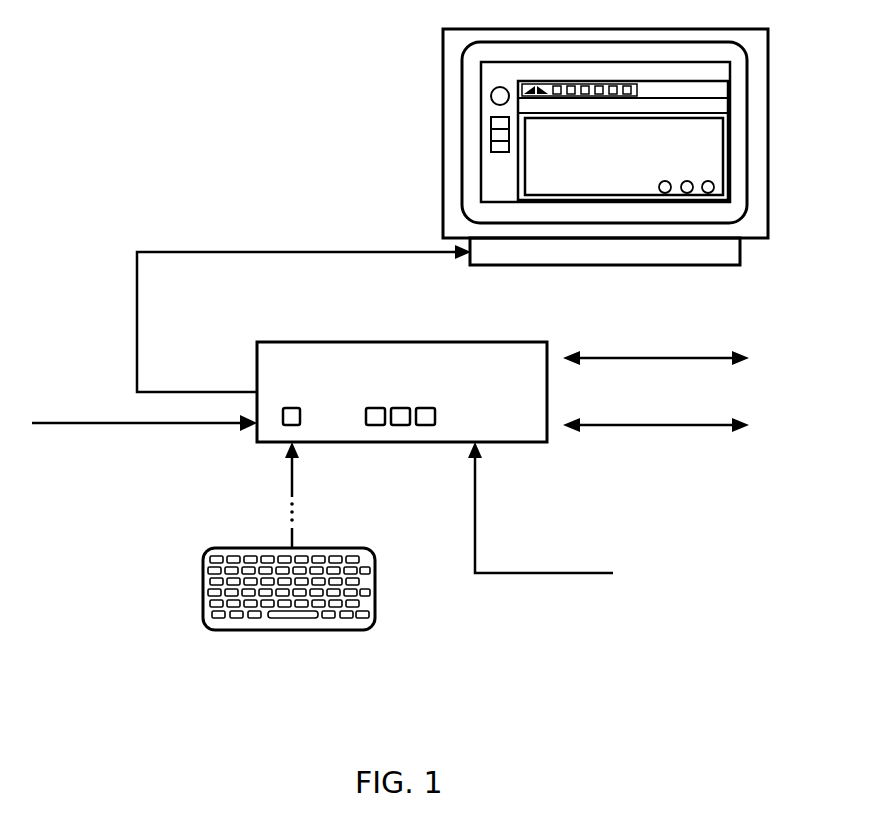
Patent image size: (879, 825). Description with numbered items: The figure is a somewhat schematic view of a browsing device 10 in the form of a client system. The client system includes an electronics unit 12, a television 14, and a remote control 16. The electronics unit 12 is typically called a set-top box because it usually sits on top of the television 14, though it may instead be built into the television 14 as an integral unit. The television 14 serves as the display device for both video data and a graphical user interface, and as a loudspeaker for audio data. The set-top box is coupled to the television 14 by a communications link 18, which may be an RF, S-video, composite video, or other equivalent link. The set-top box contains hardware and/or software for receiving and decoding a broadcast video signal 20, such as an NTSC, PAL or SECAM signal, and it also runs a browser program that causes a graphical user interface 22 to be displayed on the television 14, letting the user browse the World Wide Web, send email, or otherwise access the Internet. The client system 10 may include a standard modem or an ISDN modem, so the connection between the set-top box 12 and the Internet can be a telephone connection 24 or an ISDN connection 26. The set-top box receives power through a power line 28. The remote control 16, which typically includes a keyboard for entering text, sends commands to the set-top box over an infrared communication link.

The browsing device 10 is at (218, 186).
The electronics unit 12 is at (526, 433).
The television 14 is at (770, 143).
The remote control 16 is at (298, 632).
The communications link 18 is at (137, 272).
The broadcast video signal 20 is at (219, 425).
The graphical user interface 22 is at (632, 64).
The telephone connection 24 is at (703, 356).
The ISDN connection 26 is at (693, 427).
The power line 28 is at (590, 572).